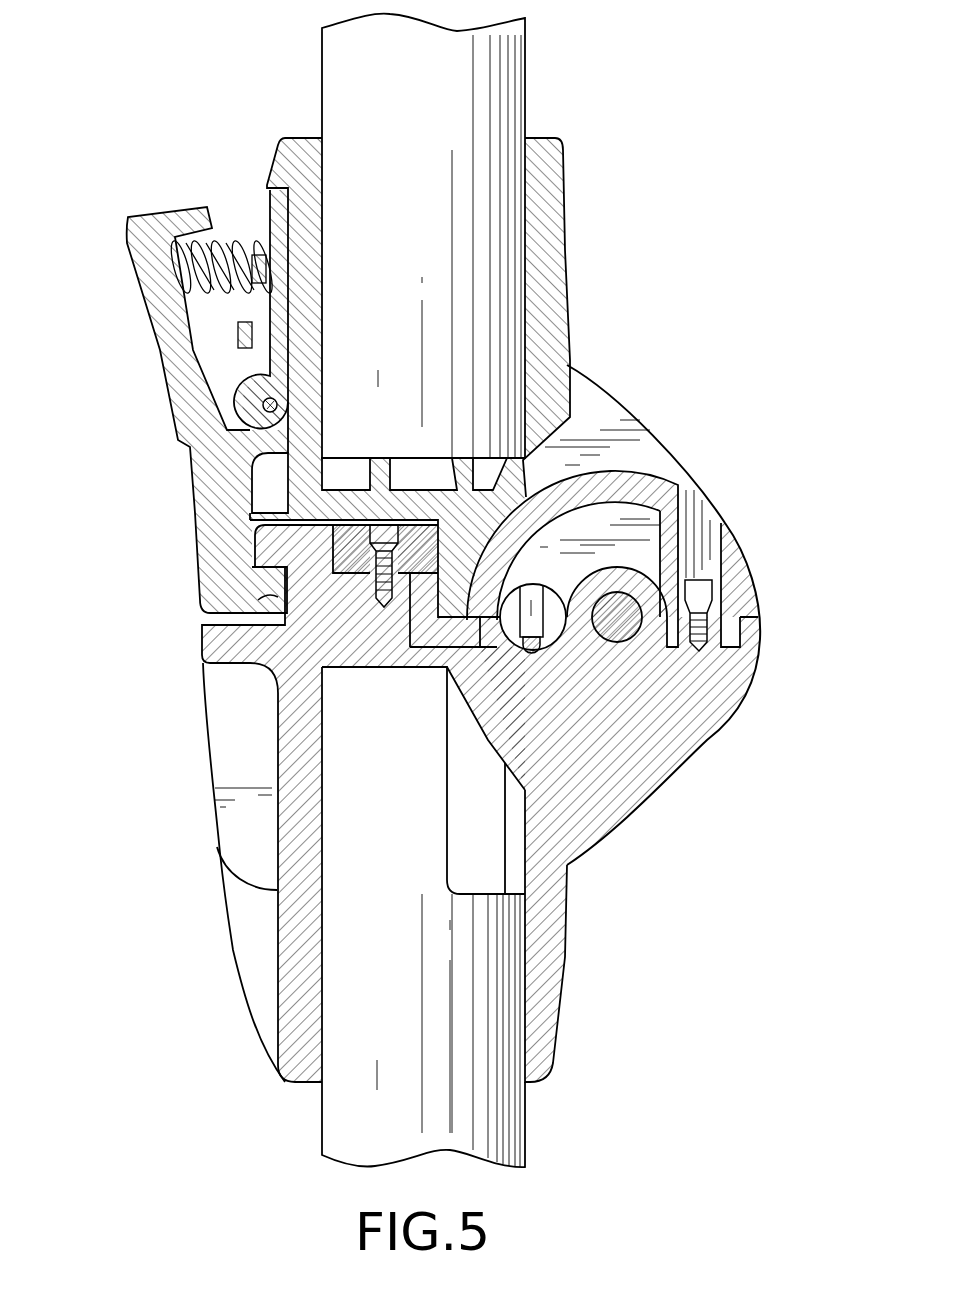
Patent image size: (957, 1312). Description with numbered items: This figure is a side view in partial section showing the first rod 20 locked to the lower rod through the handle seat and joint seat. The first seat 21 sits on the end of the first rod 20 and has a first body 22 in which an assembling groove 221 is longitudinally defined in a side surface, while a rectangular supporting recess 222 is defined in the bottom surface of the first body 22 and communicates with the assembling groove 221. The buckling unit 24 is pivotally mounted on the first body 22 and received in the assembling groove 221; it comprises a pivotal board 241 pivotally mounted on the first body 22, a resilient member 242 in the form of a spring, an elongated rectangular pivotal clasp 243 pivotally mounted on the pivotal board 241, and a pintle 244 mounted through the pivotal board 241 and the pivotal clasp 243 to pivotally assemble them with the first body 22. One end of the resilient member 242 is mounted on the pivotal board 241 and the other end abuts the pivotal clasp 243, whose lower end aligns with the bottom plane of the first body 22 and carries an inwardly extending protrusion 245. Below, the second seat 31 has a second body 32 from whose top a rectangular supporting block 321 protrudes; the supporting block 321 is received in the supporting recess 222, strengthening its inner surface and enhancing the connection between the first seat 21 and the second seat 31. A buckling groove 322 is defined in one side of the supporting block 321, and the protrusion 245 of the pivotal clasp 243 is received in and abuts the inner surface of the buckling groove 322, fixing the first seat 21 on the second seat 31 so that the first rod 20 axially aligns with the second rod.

The first rod 20 is at (335, 61).
The first seat 21 is at (592, 285).
The first body 22 is at (370, 432).
The assembling groove 221 is at (285, 508).
The supporting recess 222 is at (428, 567).
The buckling unit 24 is at (215, 405).
The pivotal board 241 is at (275, 200).
The resilient member 242 is at (222, 247).
The pivotal clasp 243 is at (143, 273).
The pintle 244 is at (272, 400).
The protrusion 245 is at (275, 597).
The second seat 31 is at (441, 751).
The second body 32 is at (545, 998).
The supporting block 321 is at (275, 551).
The buckling groove 322 is at (273, 600).